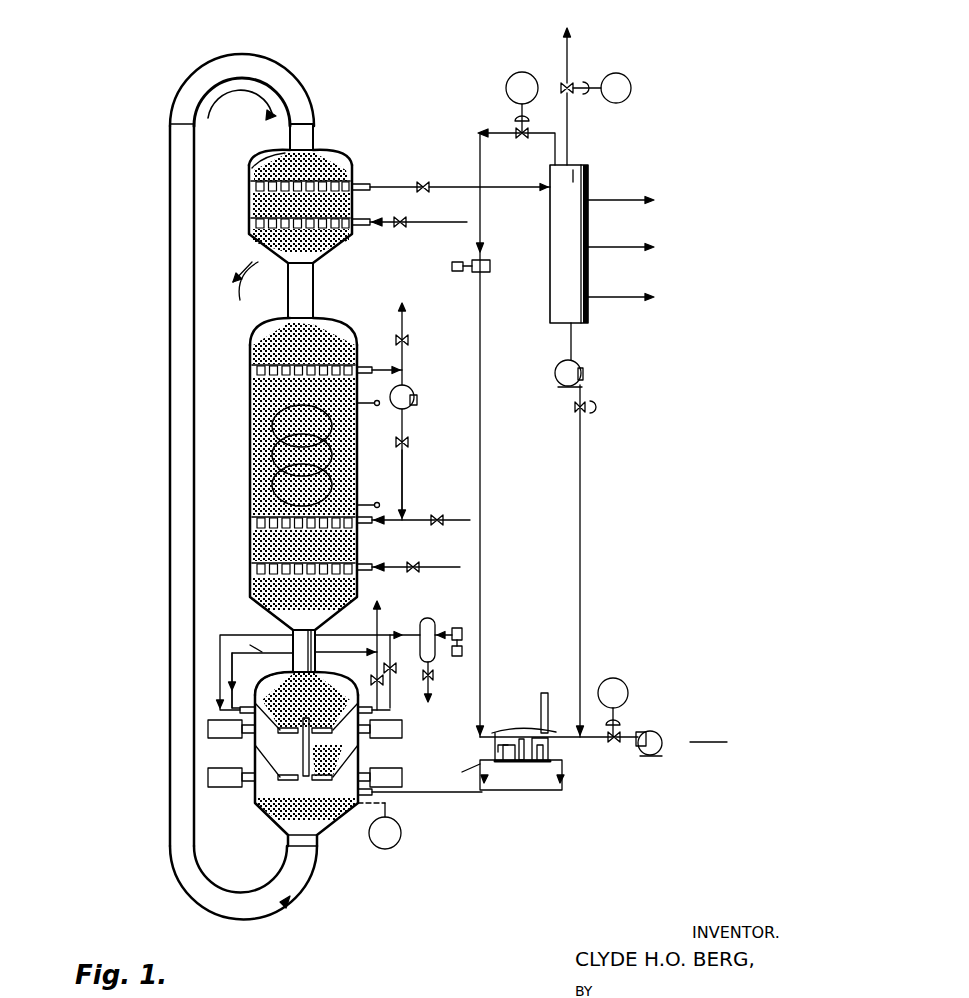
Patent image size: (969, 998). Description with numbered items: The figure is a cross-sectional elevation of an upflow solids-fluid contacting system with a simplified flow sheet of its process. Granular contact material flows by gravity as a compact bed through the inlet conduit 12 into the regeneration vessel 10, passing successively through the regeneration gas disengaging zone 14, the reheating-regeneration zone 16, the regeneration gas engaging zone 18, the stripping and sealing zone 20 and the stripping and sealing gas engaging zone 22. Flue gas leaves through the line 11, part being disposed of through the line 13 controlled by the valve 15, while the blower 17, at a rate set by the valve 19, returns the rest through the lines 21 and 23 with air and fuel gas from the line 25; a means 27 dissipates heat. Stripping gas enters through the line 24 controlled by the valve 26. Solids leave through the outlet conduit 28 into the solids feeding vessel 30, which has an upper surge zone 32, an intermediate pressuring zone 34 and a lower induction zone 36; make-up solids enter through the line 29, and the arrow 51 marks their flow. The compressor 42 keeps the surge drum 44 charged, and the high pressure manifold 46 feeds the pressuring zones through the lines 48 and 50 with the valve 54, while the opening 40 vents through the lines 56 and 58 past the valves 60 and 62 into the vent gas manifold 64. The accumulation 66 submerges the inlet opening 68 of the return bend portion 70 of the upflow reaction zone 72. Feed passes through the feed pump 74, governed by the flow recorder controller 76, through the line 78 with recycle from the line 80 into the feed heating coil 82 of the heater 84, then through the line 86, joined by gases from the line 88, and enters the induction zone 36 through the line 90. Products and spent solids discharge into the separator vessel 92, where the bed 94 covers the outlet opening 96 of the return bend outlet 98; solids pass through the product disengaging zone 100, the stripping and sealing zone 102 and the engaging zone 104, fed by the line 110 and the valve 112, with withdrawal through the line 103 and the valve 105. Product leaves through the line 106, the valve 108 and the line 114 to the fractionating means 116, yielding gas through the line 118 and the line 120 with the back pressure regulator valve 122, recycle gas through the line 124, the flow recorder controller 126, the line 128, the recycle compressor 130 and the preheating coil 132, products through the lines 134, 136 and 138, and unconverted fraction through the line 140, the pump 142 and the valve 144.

The regeneration vessel 10 is at (330, 320).
The line 11 is at (372, 392).
The inlet conduit 12 is at (316, 285).
The line 13 is at (405, 368).
The regeneration gas disengaging zone 14 is at (358, 366).
The valve 15 is at (408, 340).
The reheating-regeneration zone 16 is at (335, 430).
The blower 17 is at (417, 398).
The regeneration gas engaging zone 18 is at (360, 503).
The valve 19 is at (408, 442).
The stripping and sealing zone 20 is at (358, 550).
The line 21 is at (404, 476).
The stripping and sealing gas engaging zone 22 is at (252, 568).
The line 23 is at (378, 518).
The line 24 is at (450, 567).
The line 25 is at (447, 520).
The valve 26 is at (414, 565).
The means to dissipate heat 27 is at (252, 512).
The outlet conduit 28 is at (318, 640).
The line 29 is at (255, 612).
The solids feeding vessel 30 is at (253, 749).
The upper surge zone 32 is at (335, 690).
The intermediate pressuring zone 34 is at (380, 746).
The lower surge or induction zone 36 is at (280, 755).
The conduit or opening 40 is at (258, 690).
The compressor 42 is at (458, 628).
The surge drum 44 is at (438, 612).
The high pressure manifold 46 is at (260, 650).
The line 48 is at (378, 636).
The line 50 is at (220, 645).
The line 51 is at (245, 648).
The automatic valve 54 is at (220, 678).
The line 56 is at (370, 655).
The line 58 is at (383, 683).
The automatic valve 60 is at (400, 672).
The automatic valve 62 is at (178, 696).
The vent gas manifold 64 is at (380, 612).
The accumulation of solids 66 is at (290, 838).
The inlet opening 68 is at (232, 660).
The return bend portion 70 is at (262, 912).
The upflow reaction zone 72 is at (706, 730).
The feed pump 74 is at (640, 752).
The flow recorder controller 76 is at (630, 690).
The line 78 is at (600, 745).
The line 80 is at (582, 615).
The feed heating coil 82 is at (538, 722).
The heater 84 is at (505, 790).
The line 86 is at (545, 792).
The line 88 is at (425, 791).
The line 90 is at (410, 805).
The separator vessel 92 is at (358, 183).
The bed of compact solids 94 is at (300, 157).
The outlet opening 96 is at (322, 150).
The return bend outlet 98 is at (316, 125).
The product disengaging zone 100 is at (372, 186).
The stripping and sealing zone 102 is at (358, 200).
The line 103 is at (262, 240).
The stripping and sealing gas engaging zone 104 is at (251, 222).
The valve 105 is at (238, 287).
The line 106 is at (415, 186).
The valve 108 is at (428, 185).
The line 110 is at (404, 221).
The valve 112 is at (382, 225).
The line 114 is at (517, 190).
The product fractionating means 116 is at (588, 190).
The line 118 is at (569, 142).
The line 120 is at (575, 52).
The back pressure regulator valve 122 is at (632, 88).
The line 124 is at (545, 145).
The flow recorder controller 126 is at (522, 72).
The line 128 is at (484, 242).
The recycle compressor 130 is at (492, 266).
The preheating coil 132 is at (512, 735).
The product line 134 is at (605, 203).
The product line 136 is at (600, 250).
The product line 138 is at (620, 300).
The line 140 is at (568, 340).
The pump 142 is at (582, 372).
The valve 144 is at (575, 407).